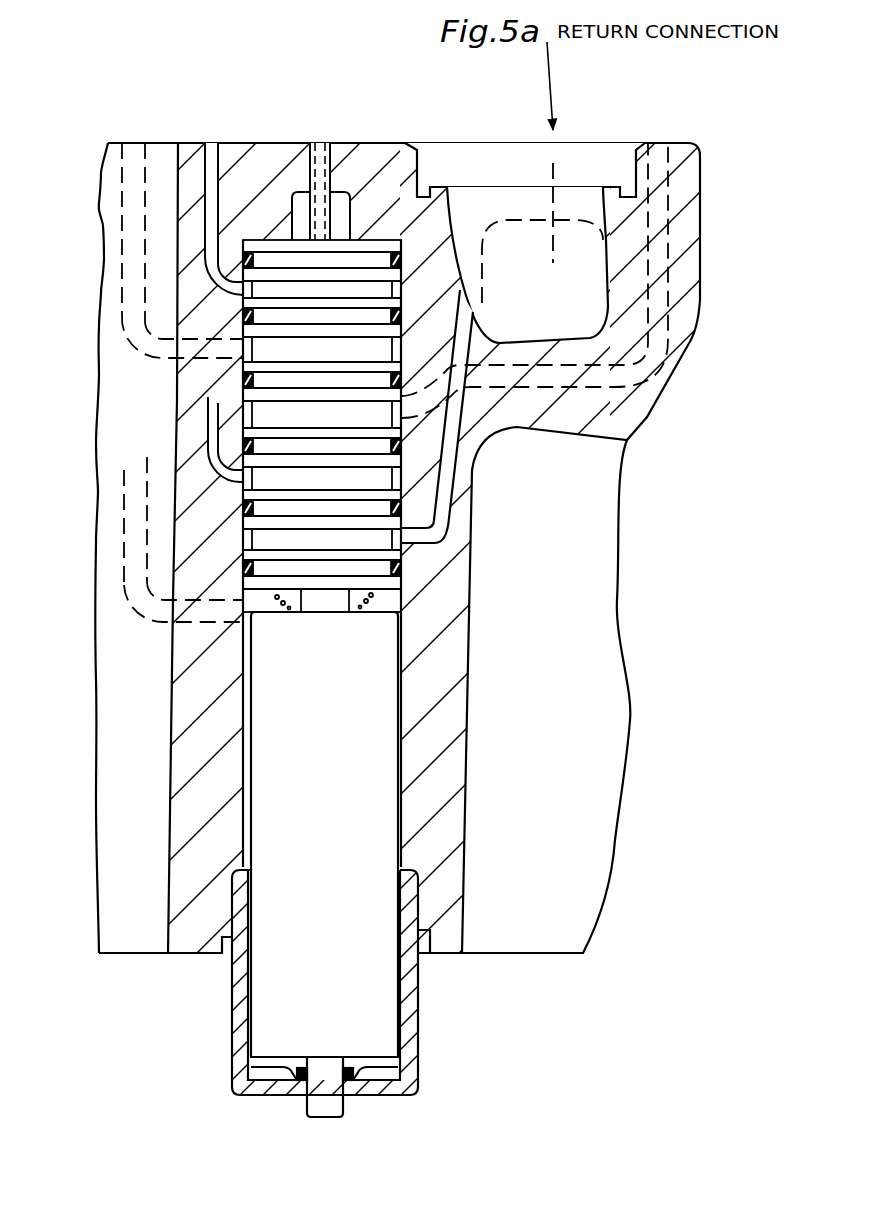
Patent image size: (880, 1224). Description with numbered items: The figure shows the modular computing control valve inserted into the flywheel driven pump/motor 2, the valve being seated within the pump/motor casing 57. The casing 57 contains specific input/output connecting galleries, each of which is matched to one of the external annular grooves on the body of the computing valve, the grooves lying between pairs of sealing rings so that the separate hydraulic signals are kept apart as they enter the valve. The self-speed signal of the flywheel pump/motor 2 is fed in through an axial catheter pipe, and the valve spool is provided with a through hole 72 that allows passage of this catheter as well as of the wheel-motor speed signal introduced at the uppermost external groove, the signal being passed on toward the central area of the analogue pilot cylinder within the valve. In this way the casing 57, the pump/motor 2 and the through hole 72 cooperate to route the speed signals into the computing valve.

The pump/motor casing 57 is at (190, 738).
The flywheel driven pump/motor 2 is at (320, 136).
The through hole 72 is at (211, 163).